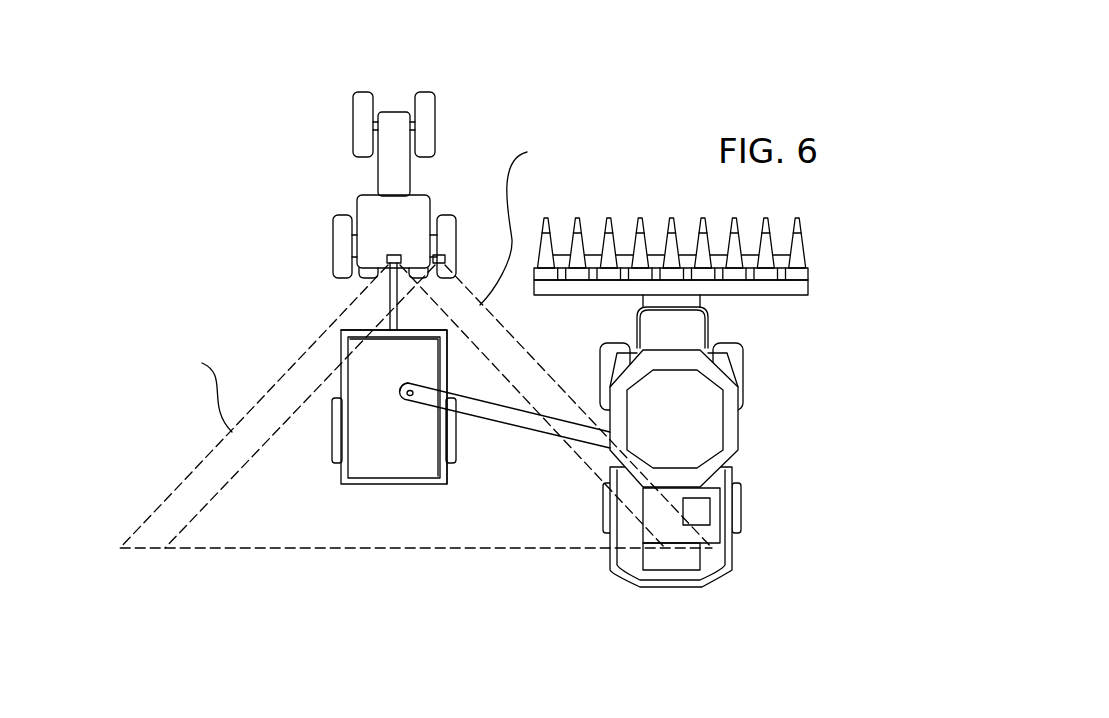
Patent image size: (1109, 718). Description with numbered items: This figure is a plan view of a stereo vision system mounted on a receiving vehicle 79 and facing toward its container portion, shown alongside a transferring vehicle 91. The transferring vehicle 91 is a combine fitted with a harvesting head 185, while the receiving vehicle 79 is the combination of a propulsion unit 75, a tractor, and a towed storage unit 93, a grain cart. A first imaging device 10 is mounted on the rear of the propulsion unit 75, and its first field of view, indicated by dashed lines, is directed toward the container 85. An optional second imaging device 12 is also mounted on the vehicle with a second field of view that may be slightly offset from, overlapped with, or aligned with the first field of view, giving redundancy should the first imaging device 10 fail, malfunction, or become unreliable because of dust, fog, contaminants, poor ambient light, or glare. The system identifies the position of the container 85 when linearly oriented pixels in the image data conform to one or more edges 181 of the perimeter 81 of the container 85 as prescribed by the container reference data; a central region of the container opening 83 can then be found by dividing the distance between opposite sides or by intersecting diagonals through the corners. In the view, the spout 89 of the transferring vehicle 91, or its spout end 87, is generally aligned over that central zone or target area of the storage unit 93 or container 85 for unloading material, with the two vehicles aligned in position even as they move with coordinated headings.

The propulsion unit 75 is at (397, 118).
The first imaging device 10 is at (391, 255).
The second imaging device 12 is at (445, 257).
The receiving vehicle 79 is at (327, 342).
The perimeter 81 is at (383, 342).
The edges 181 is at (417, 332).
The container opening 83 is at (382, 443).
The container 85 is at (352, 487).
The spout end 87 is at (410, 396).
The spout 89 is at (525, 428).
The transferring vehicle 91 is at (738, 433).
The storage unit 93 is at (313, 489).
The harvesting head 185 is at (800, 252).